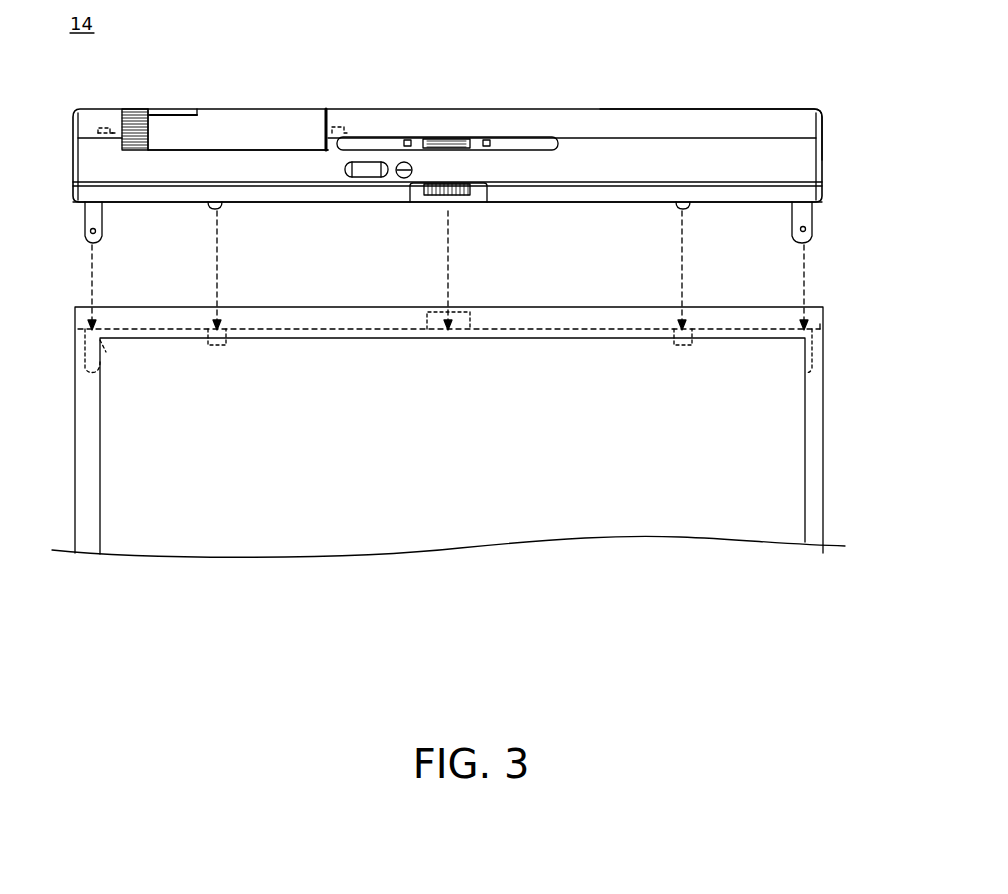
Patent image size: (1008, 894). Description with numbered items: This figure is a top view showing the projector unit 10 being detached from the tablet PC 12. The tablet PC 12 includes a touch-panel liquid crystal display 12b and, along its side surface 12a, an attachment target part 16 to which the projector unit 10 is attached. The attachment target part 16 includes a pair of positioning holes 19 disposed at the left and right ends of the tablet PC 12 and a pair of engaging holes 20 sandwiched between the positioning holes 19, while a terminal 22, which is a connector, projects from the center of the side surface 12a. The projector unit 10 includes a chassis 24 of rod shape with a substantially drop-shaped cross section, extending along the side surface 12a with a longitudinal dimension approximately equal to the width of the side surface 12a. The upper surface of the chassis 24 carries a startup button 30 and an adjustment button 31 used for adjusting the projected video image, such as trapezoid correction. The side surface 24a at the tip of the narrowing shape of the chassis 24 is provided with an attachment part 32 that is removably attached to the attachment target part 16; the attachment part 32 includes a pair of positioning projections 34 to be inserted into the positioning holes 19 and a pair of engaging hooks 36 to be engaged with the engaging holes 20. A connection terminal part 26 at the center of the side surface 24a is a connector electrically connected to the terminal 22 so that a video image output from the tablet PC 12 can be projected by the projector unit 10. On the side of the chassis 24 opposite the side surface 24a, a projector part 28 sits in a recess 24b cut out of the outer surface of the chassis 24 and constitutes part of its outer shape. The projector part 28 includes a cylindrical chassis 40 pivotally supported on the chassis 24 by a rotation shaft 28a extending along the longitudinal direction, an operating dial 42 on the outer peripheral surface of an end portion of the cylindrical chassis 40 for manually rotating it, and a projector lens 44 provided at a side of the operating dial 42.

The projector unit 10 is at (672, 90).
The tablet PC 12 is at (832, 416).
The side surface 12a is at (540, 338).
The display 12b is at (780, 453).
The attachment target part 16 is at (722, 312).
The positioning holes 19 is at (106, 352).
The engaging holes 20 is at (216, 348).
The terminal 22 is at (462, 312).
The chassis 24 is at (757, 108).
The side surface 24a is at (251, 204).
The recess 24b is at (299, 150).
The connection terminal part 26 is at (435, 202).
The projector part 28 is at (266, 100).
The rotation shaft 28a is at (110, 122).
The startup button 30 is at (404, 162).
The adjustment button 31 is at (366, 162).
The attachment part 32 is at (152, 222).
The positioning projections 34 is at (92, 226).
The engaging hooks 36 is at (214, 210).
The cylindrical chassis 40 is at (220, 110).
The operating dial 42 is at (140, 109).
The projector lens 44 is at (181, 113).